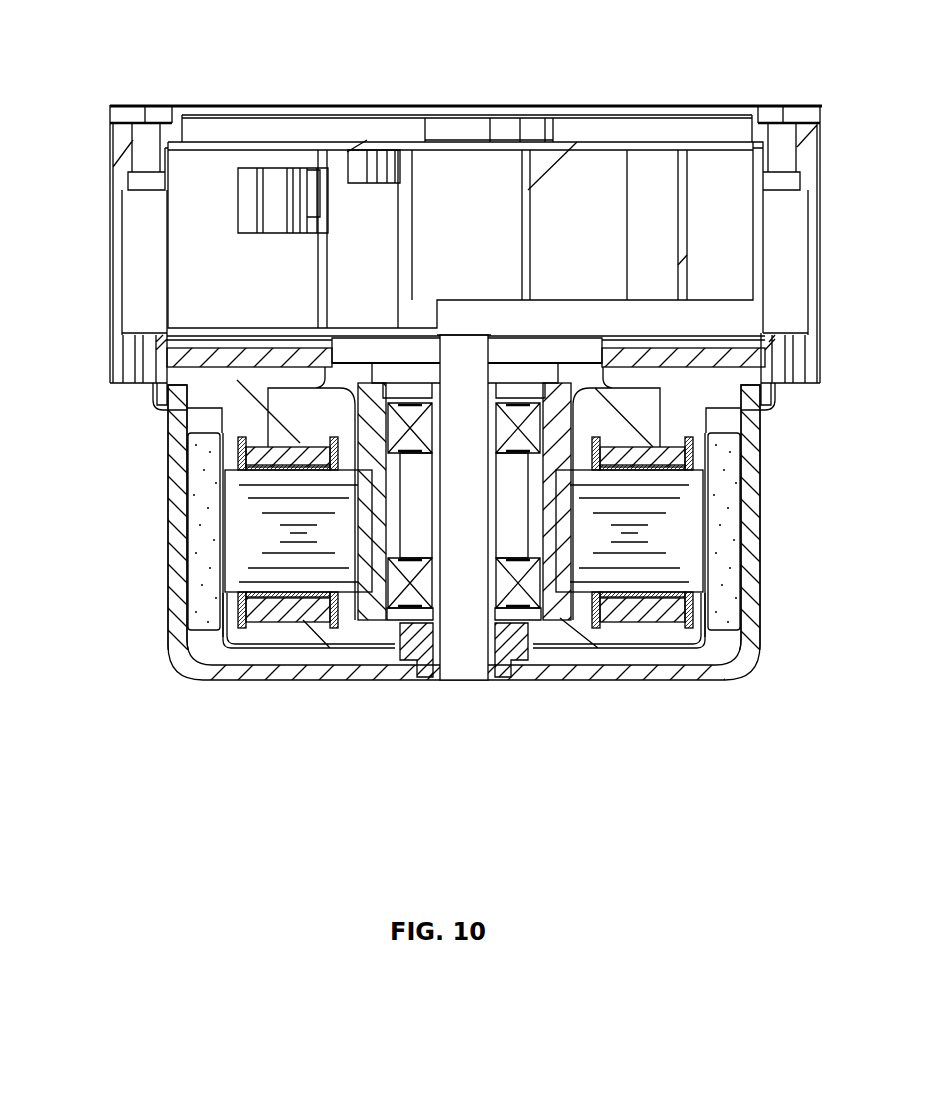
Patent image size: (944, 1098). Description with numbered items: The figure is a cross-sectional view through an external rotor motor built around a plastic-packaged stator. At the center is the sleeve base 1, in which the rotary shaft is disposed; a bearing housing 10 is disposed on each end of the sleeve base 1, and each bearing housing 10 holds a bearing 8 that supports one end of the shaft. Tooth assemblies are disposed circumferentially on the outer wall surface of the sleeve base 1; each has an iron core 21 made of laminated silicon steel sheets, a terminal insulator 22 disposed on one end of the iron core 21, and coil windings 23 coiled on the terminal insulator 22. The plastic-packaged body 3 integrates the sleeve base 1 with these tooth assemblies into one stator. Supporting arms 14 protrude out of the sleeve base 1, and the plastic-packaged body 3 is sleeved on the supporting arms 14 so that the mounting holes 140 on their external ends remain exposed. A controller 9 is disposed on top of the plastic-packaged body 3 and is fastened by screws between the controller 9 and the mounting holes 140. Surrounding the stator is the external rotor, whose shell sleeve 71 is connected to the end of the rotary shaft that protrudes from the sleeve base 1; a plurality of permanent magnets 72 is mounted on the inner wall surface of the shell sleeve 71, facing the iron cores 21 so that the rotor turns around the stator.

The sleeve base 1 is at (387, 517).
The plastic-packaged body 3 is at (670, 403).
The bearing 8 is at (410, 613).
The controller 9 is at (302, 128).
The bearing housing 10 is at (372, 663).
The supporting arm 14 is at (225, 362).
The mounting hole 140 is at (147, 363).
The iron core 21 is at (687, 540).
The terminal insulator 22 is at (693, 465).
The coil winding 23 is at (650, 607).
The shell sleeve 71 is at (187, 555).
The permanent magnet 72 is at (202, 598).